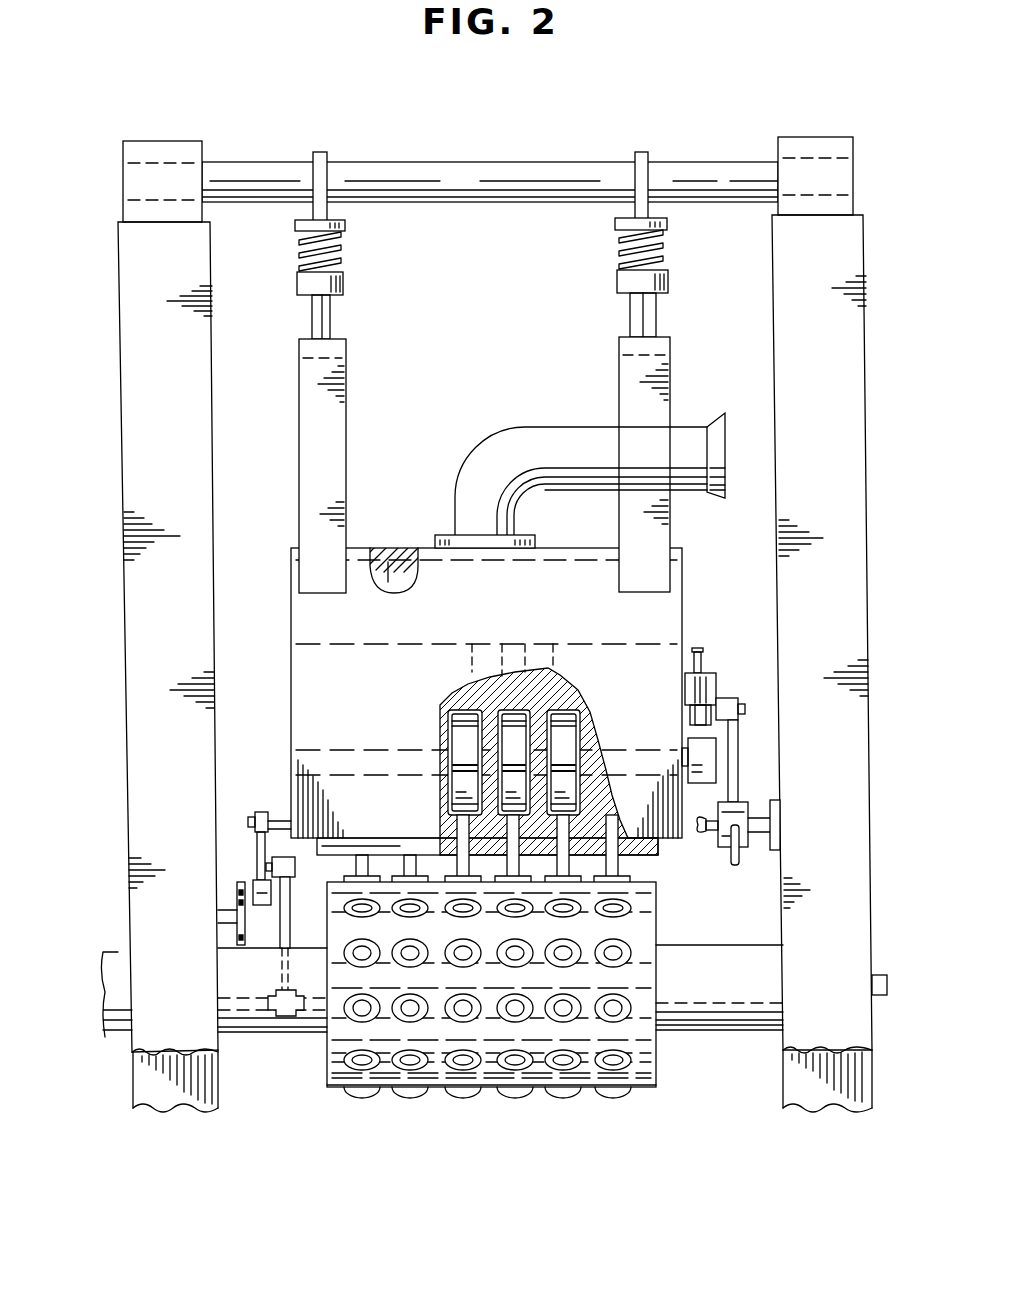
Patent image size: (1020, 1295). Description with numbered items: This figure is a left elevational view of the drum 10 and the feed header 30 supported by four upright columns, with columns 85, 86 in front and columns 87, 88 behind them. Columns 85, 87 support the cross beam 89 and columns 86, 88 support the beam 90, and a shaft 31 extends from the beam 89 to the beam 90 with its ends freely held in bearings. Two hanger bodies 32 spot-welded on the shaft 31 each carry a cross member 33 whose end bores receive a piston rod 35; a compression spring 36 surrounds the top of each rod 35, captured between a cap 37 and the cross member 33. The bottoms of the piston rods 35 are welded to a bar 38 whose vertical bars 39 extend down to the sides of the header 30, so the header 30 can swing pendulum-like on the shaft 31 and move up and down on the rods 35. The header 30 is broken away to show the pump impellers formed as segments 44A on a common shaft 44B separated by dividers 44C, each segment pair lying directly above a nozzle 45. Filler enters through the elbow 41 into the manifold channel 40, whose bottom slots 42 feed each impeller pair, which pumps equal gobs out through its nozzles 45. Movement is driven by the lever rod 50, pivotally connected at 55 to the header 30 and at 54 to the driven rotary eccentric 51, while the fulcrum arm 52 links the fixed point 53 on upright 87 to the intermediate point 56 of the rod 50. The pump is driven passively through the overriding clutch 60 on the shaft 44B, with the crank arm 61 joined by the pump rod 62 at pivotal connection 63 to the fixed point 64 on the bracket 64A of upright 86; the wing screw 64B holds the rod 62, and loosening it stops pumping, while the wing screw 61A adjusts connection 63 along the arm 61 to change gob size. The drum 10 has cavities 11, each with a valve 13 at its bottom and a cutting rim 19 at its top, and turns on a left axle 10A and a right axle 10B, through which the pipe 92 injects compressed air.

The drum 10 is at (656, 1101).
The left axle of drum 10A is at (104, 1036).
The right axle of drum 10B is at (730, 1008).
The cavities 11 is at (636, 1060).
The valve 13 is at (622, 1000).
The cutting edge or rim 19 is at (622, 943).
The feed header 30 is at (693, 581).
The shaft 31 is at (512, 167).
The hanger body 32 is at (318, 152).
The cross member 33 is at (345, 291).
The piston rod 35 is at (313, 318).
The compression spring 36 is at (345, 258).
The cap 37 is at (345, 226).
The bar 38 is at (346, 349).
The vertical bars 39 is at (340, 428).
The manifold channel 40 is at (392, 575).
The elbow 41 is at (548, 432).
The bottom slots 42 is at (513, 690).
The impeller segments 44A is at (572, 727).
The common shaft 44B is at (360, 750).
The dividers 44C is at (590, 750).
The nozzle 45 is at (410, 868).
The lever rod 50 is at (258, 856).
The driven rotary eccentric 51 is at (233, 933).
The fulcrum arm 52 is at (288, 910).
The fixed point 53 is at (287, 1017).
The pivotal connection 54 is at (263, 902).
The pivotal connection 55 is at (283, 820).
The intermediate point 56 is at (294, 866).
The overriding clutch 60 is at (712, 755).
The crank arm 61 is at (716, 680).
The wing screw 61A is at (700, 650).
The pump rod 62 is at (738, 778).
The pivotal connection 63 is at (741, 704).
The fixed point 64 is at (748, 848).
The bracket 64A is at (778, 815).
The wing screw 64B is at (707, 838).
The upright column 85 is at (118, 346).
The upright column 86 is at (772, 330).
The upright column 87 is at (167, 1106).
The upright column 88 is at (812, 1096).
The cross beam 89 is at (142, 140).
The beam 90 is at (820, 137).
The pipe 92 is at (886, 997).